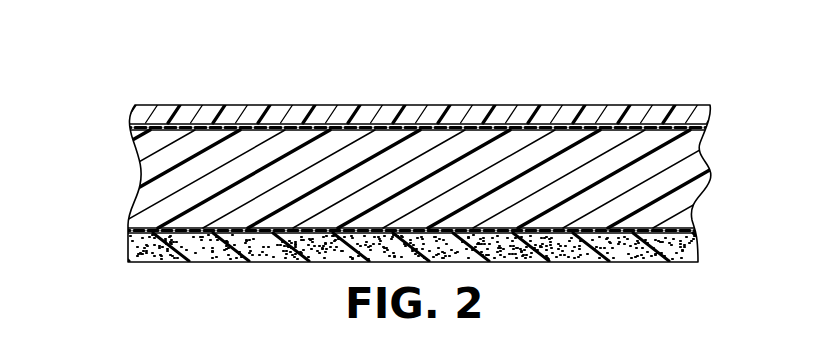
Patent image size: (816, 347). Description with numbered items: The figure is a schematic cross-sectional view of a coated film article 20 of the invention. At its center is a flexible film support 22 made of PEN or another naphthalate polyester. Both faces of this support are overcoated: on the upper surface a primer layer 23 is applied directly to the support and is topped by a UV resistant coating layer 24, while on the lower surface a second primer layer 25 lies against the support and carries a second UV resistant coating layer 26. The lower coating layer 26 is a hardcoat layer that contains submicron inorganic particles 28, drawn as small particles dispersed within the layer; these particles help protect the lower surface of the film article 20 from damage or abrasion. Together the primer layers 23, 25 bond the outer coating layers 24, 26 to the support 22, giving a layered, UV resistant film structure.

The film article 20 is at (264, 77).
The flexible film support 22 is at (140, 175).
The primer layer 23 is at (143, 127).
The UV resistant coating layer 24 is at (148, 106).
The primer layer 25 is at (128, 231).
The UV resistant coating layer 26 is at (186, 263).
The submicron inorganic particles 28 is at (273, 251).